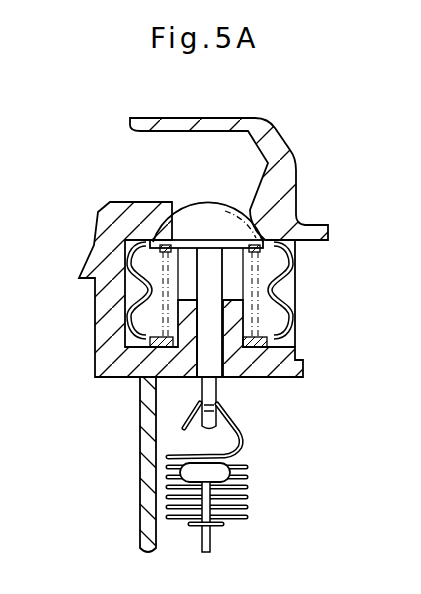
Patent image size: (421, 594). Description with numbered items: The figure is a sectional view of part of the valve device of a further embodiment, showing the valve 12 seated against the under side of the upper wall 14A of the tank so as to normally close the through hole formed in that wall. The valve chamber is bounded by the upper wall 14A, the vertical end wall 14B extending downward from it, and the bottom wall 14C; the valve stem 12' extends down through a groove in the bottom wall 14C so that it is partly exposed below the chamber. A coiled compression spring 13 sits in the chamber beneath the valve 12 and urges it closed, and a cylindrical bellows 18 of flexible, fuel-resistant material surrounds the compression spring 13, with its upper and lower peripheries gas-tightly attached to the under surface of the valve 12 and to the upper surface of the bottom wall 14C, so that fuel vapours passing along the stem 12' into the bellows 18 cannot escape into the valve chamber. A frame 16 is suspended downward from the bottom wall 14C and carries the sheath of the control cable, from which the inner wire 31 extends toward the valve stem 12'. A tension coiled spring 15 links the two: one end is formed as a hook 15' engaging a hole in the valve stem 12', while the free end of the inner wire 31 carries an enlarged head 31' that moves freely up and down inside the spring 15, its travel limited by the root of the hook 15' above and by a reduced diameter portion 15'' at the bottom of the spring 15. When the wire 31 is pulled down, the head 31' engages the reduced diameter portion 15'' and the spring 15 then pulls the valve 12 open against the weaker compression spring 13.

The valve 12 is at (206, 214).
The valve stem 12' is at (268, 338).
The coiled compression spring 13 is at (296, 328).
The upper wall 14A is at (306, 226).
The vertical end wall 14B is at (100, 307).
The bottom wall 14C is at (113, 378).
The coiled spring 15 is at (231, 492).
The hook 15' is at (223, 427).
The reduced diameter portion 15'' is at (246, 534).
The frame 16 is at (140, 492).
The cylindrical bellows 18 is at (300, 283).
The inner wire 31 is at (226, 520).
The enlarged head 31' is at (238, 471).